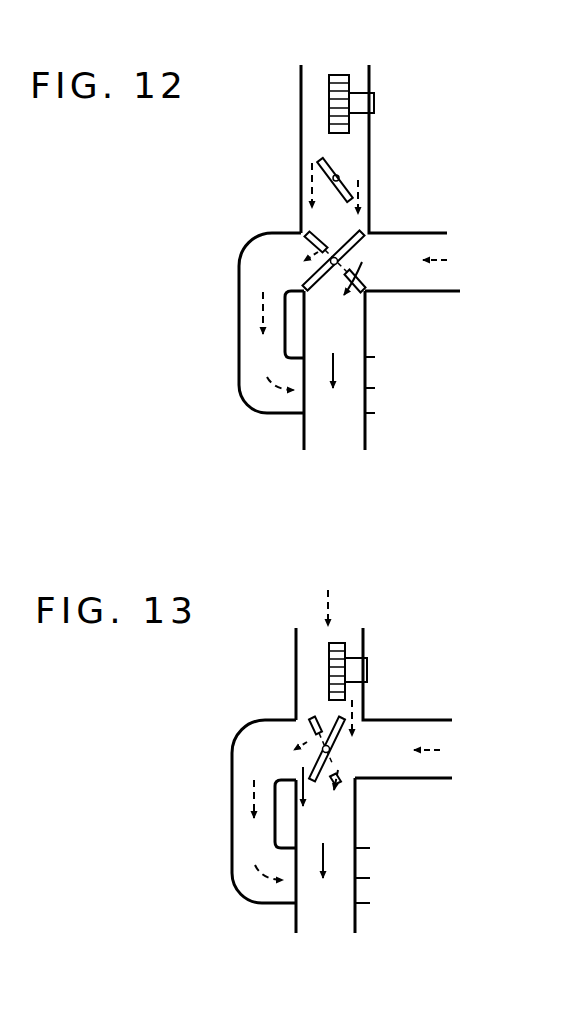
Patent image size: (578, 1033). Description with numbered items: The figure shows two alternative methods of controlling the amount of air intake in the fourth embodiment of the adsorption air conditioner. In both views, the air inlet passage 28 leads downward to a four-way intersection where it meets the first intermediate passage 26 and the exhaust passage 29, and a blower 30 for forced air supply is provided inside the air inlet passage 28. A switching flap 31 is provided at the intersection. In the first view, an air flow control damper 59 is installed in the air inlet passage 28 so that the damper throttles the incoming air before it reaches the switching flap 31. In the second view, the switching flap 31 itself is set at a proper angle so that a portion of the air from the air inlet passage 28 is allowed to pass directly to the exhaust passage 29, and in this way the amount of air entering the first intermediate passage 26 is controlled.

In FIG. 12, the first intermediate passage 26 is at (256, 310).
In FIG. 13, the first intermediate passage 26 is at (247, 796).
In FIG. 12, the air inlet passage 28 is at (308, 218).
In FIG. 13, the air inlet passage 28 is at (312, 668).
In FIG. 12, the exhaust passage 29 is at (318, 428).
In FIG. 13, the exhaust passage 29 is at (303, 908).
In FIG. 12, the blower 30 is at (353, 120).
In FIG. 13, the blower 30 is at (348, 655).
In FIG. 12, the switching flap 31 is at (366, 237).
In FIG. 13, the switching flap 31 is at (363, 752).
In FIG. 12, the air flow control damper 59 is at (320, 160).